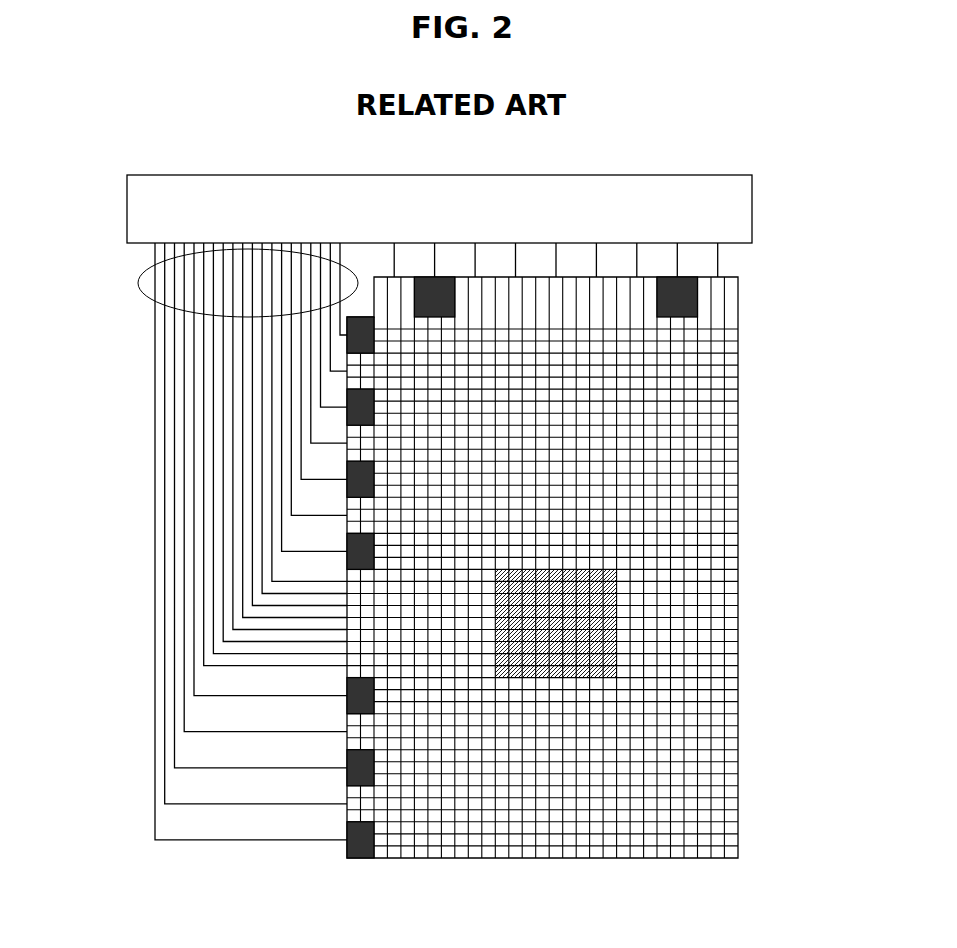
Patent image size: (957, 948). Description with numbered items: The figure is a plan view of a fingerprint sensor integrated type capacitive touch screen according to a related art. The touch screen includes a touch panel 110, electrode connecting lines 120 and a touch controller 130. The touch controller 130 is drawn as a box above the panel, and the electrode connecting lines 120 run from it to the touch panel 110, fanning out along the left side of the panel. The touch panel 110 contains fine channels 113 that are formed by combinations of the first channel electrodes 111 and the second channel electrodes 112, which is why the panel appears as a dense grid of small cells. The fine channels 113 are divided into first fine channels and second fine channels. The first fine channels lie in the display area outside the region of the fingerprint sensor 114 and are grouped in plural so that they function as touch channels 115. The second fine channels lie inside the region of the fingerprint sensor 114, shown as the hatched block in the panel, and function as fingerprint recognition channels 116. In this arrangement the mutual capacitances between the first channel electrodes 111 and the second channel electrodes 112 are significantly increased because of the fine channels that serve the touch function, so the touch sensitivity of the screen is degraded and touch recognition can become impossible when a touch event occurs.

The touch panel 110 is at (760, 820).
The first channel electrodes 111 is at (725, 404).
The second channel electrodes 112 is at (730, 432).
The fine channels 113 is at (727, 466).
The fingerprint sensor 114 is at (620, 620).
The touch channels 115 is at (251, 843).
The fingerprint recognition channels 116 is at (205, 633).
The electrode connecting lines 120 is at (138, 283).
The touch controller 130 is at (752, 211).